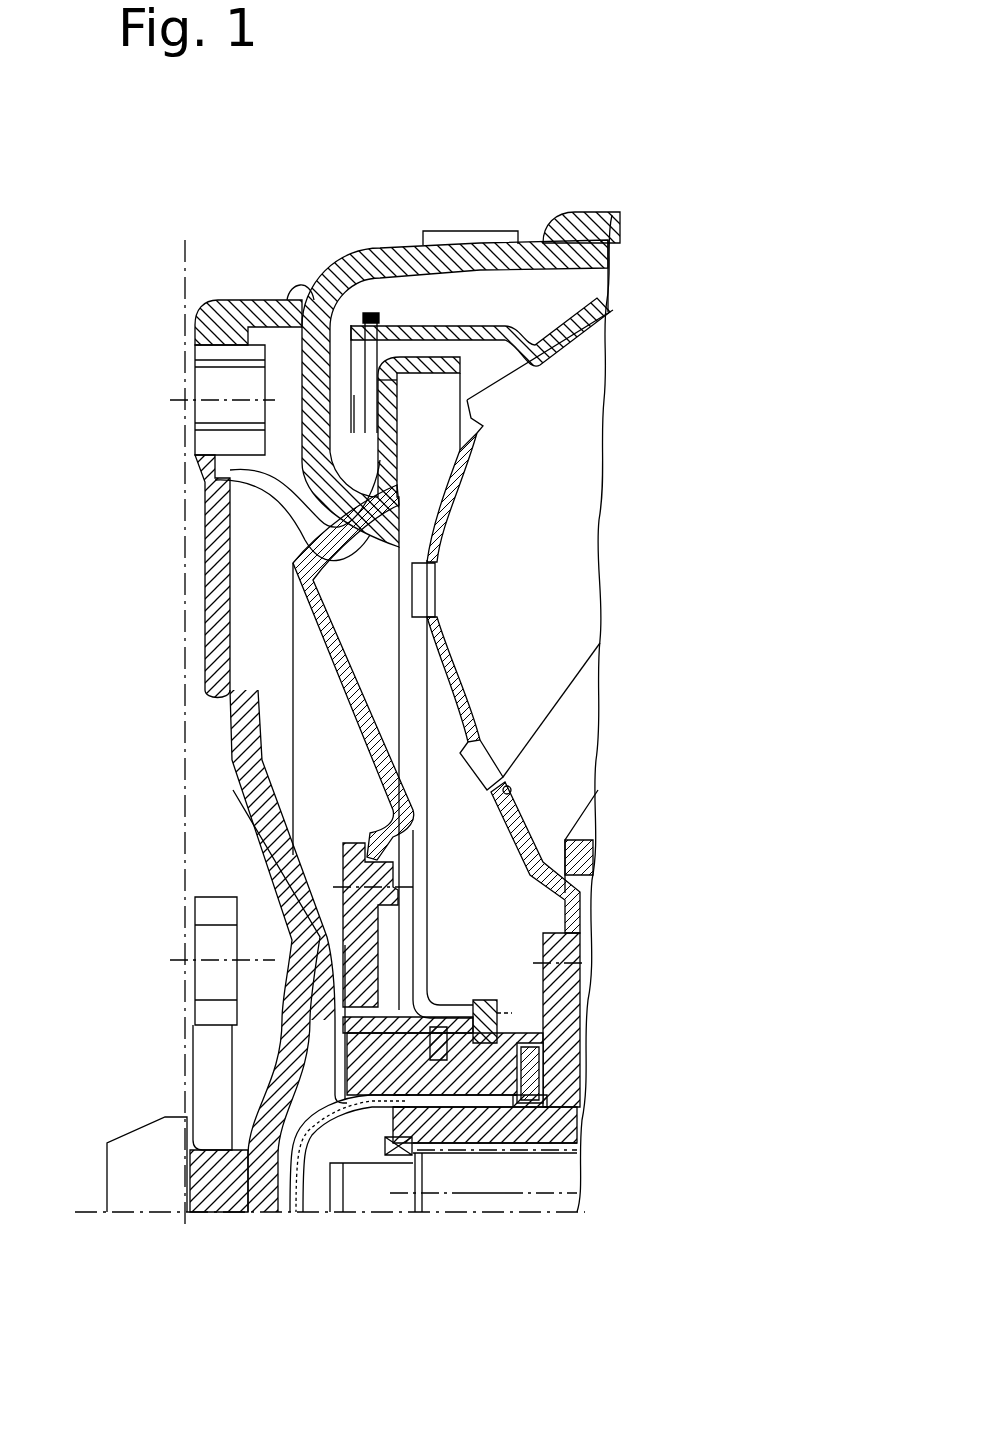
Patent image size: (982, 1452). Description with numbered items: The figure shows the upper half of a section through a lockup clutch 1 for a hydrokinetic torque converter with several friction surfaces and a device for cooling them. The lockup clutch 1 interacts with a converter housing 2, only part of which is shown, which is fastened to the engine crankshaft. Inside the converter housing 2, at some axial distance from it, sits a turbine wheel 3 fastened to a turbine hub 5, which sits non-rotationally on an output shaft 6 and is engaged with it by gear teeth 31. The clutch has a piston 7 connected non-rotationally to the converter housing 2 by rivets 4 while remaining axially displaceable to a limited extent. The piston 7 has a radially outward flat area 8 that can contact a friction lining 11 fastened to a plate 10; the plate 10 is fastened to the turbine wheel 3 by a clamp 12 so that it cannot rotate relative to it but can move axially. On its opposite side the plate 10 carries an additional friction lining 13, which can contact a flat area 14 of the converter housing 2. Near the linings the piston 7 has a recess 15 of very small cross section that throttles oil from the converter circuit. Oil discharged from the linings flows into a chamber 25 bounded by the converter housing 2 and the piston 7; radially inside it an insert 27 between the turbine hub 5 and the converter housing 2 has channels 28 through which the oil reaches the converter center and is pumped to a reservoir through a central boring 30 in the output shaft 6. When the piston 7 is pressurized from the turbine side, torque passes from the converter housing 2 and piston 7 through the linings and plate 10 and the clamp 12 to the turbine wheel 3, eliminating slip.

The lockup clutch 1 is at (398, 305).
The converter housing 2 is at (262, 790).
The turbine wheel 3 is at (442, 493).
The rivets 4 is at (407, 890).
The turbine hub 5 is at (567, 1127).
The output shaft 6 is at (500, 1175).
The piston 7 is at (345, 683).
The radially outward flat area 8 is at (383, 448).
The plate 10 is at (368, 312).
The friction lining 11 is at (313, 397).
The clamp 12 is at (435, 319).
The additional friction lining 13 is at (188, 478).
The flat area 14 is at (333, 388).
The recess 15 is at (408, 412).
The chamber 25 is at (313, 845).
The insert 27 is at (335, 1040).
The channels 28 is at (335, 1052).
The central boring 30 is at (470, 1193).
The gear teeth 31 is at (530, 1157).